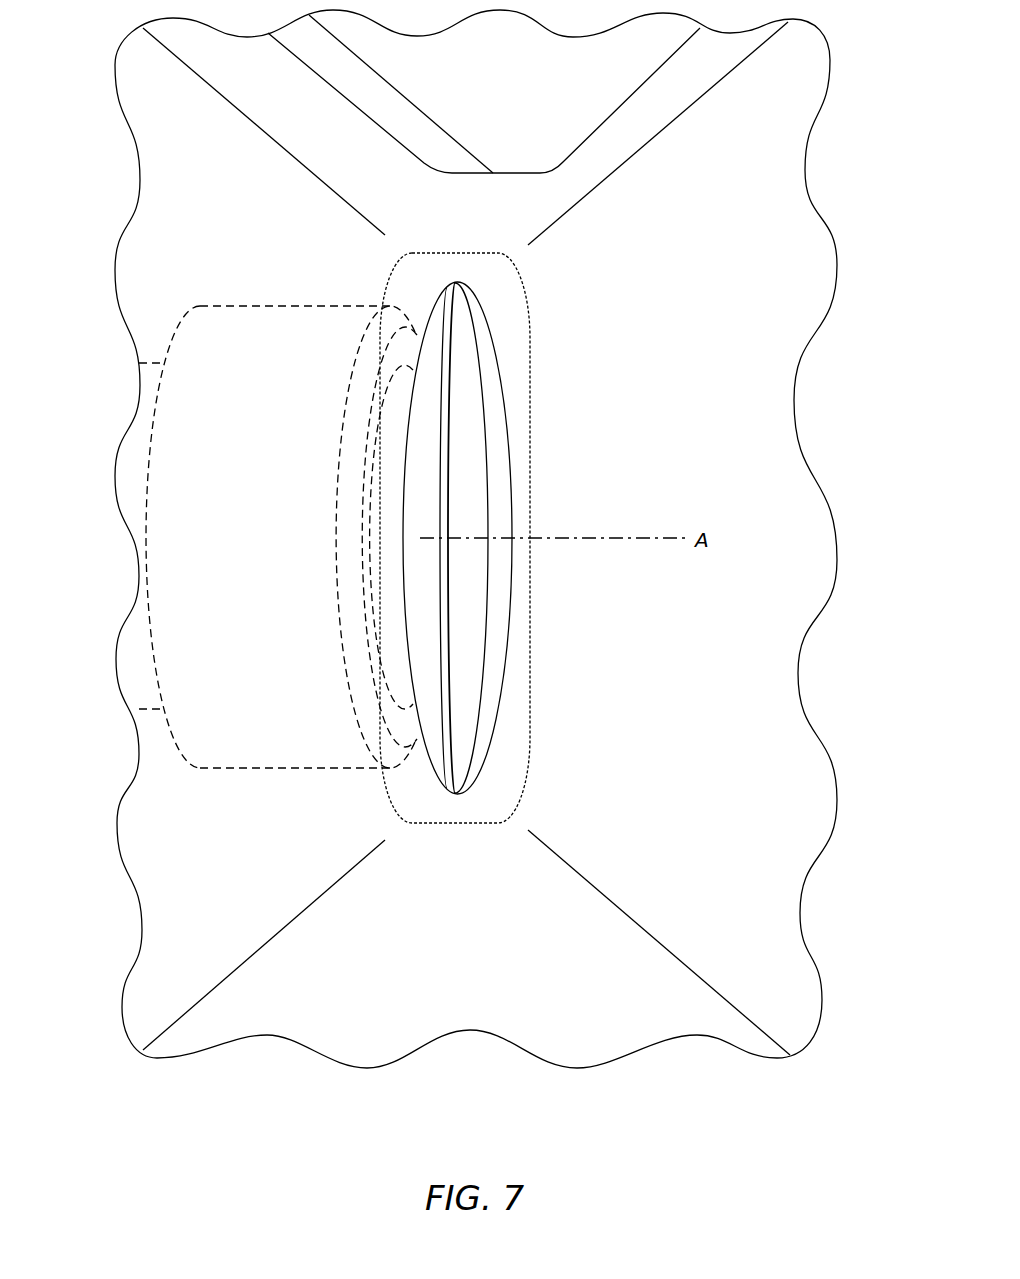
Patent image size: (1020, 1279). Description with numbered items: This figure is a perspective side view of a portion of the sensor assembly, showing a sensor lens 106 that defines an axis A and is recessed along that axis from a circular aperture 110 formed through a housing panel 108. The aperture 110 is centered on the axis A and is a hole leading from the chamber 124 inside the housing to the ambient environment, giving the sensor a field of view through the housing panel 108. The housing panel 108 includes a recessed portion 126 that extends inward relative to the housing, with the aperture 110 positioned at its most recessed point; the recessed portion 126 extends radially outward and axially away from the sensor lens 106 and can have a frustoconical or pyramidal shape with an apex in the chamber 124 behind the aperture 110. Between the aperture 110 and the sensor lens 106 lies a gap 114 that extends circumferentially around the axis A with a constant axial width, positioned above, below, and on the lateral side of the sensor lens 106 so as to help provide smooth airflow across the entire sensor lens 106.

The sensor lens 106 is at (425, 491).
The housing panel 108 is at (211, 848).
The aperture 110 is at (473, 756).
The gap 114 is at (441, 665).
The chamber 124 is at (462, 413).
The recessed portion 126 is at (712, 850).